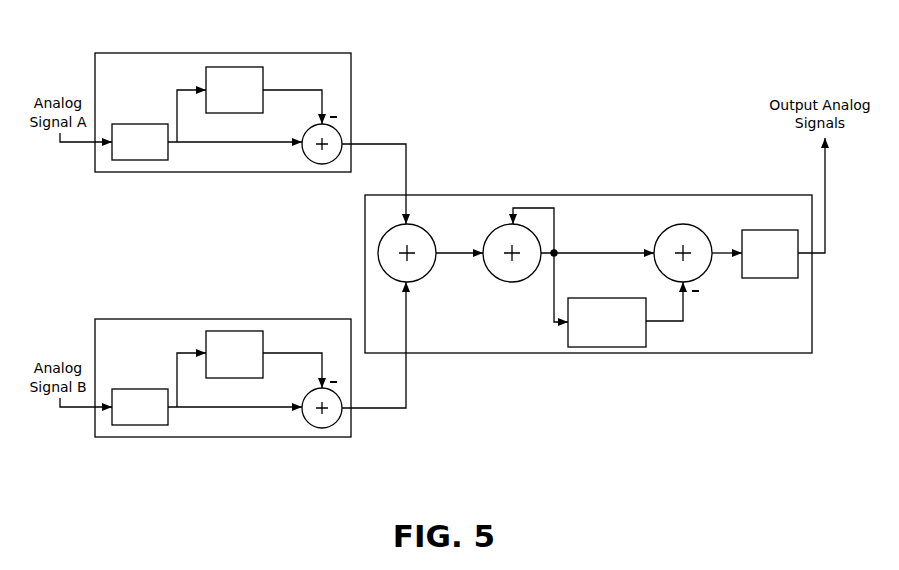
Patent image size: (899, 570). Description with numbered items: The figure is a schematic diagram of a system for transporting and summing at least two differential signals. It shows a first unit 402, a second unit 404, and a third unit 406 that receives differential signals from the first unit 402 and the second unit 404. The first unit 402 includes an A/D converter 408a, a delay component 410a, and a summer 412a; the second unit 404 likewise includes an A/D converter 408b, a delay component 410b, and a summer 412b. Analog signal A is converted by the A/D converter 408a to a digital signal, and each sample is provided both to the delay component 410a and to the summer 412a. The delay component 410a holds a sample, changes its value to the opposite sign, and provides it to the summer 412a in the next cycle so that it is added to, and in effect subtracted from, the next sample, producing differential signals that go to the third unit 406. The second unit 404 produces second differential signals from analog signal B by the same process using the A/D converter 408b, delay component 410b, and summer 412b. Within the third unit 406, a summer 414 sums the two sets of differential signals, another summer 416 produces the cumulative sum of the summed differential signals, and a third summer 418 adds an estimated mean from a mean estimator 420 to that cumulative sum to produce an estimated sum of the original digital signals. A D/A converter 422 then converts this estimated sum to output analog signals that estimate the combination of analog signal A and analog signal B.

The first unit 402 is at (127, 53).
The second unit 404 is at (127, 319).
The third unit 406 is at (478, 195).
The A/D converter 408a is at (140, 124).
The A/D converter 408b is at (140, 389).
The delay component 410a is at (255, 67).
The delay component 410b is at (255, 331).
The summer 412a is at (337, 130).
The summer 412b is at (338, 393).
The summer 414 is at (432, 237).
The summer 416 is at (497, 280).
The third summer 418 is at (703, 227).
The mean estimator 420 is at (588, 298).
The D/A converter 422 is at (773, 278).